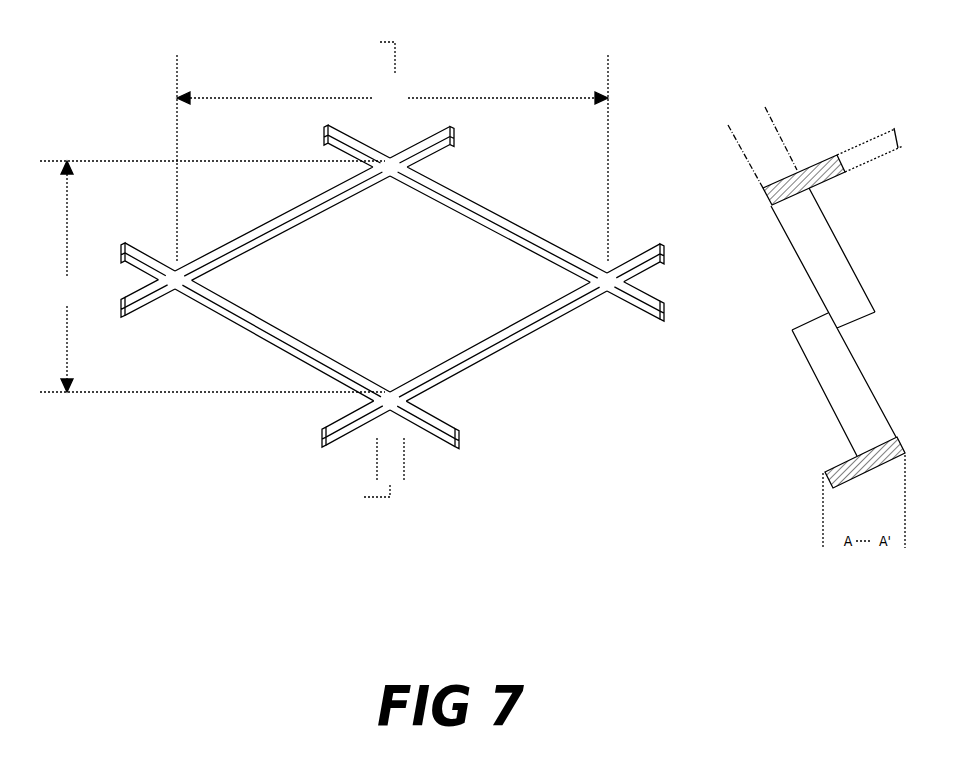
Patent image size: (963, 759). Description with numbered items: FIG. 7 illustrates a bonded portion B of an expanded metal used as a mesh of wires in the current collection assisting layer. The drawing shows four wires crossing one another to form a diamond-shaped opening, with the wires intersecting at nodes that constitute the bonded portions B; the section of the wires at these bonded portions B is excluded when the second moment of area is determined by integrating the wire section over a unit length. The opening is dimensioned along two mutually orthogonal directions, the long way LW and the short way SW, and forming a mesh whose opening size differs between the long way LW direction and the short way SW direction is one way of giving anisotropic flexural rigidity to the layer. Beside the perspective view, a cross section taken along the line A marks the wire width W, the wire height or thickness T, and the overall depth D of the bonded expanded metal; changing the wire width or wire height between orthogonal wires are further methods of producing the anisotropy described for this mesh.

The long way direction LW is at (392, 158).
The short way direction SW is at (212, 276).
The bonded portion B is at (390, 459).
The strand thickness T is at (870, 150).
The strand width W is at (762, 147).
The overall thickness D is at (864, 501).
The section line A-A' A is at (370, 270).